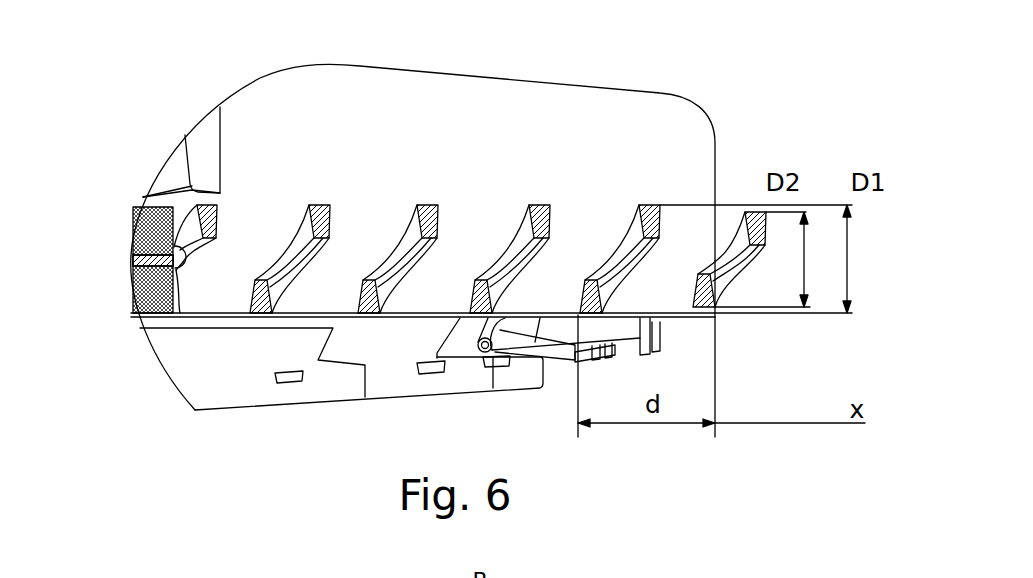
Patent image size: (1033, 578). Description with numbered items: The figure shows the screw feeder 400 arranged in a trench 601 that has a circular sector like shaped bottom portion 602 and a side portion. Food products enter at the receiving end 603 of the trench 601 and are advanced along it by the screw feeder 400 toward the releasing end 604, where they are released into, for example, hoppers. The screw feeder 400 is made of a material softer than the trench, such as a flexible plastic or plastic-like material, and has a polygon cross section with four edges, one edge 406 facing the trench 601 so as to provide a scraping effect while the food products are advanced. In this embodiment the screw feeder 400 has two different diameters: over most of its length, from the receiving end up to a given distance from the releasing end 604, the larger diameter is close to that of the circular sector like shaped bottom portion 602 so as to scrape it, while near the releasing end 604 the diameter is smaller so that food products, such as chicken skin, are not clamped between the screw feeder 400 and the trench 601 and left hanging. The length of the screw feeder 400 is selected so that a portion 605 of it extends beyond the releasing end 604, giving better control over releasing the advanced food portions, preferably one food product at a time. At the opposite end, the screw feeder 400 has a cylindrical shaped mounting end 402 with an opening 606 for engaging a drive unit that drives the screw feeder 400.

The screw feeder 400 is at (450, 192).
The mounting end 402 is at (182, 296).
The edge 406 is at (250, 318).
The trench 601 is at (594, 124).
The circular sector like shaped bottom portion 602 is at (390, 320).
The receiving end 603 is at (228, 184).
The releasing end 604 is at (703, 248).
The portion of the screw feeder 605 is at (738, 287).
The opening 606 is at (128, 259).